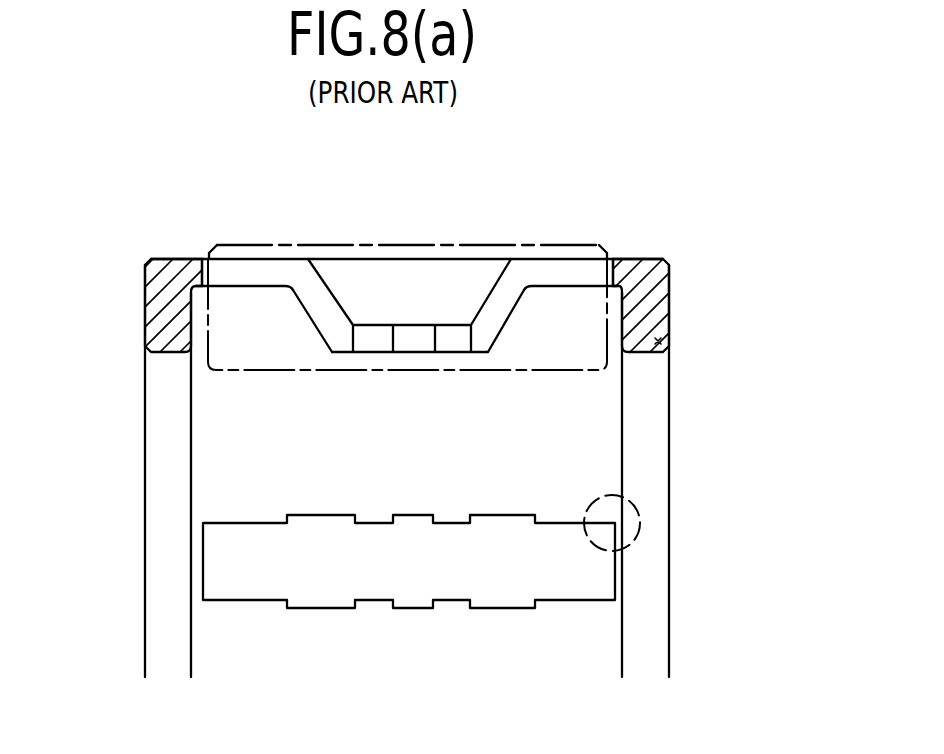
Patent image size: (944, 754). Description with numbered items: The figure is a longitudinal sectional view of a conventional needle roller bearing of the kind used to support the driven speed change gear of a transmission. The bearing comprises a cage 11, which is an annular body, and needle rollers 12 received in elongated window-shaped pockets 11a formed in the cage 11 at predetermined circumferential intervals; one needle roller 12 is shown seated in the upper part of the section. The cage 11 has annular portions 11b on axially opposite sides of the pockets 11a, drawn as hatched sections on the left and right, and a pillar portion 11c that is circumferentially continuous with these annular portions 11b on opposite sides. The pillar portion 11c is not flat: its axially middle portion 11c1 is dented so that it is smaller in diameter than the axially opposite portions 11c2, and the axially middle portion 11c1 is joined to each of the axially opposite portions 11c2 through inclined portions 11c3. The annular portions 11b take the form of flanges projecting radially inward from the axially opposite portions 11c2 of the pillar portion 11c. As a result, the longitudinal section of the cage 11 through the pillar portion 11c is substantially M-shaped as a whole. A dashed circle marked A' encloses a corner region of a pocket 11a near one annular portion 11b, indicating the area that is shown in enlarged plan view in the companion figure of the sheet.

The cage 11 is at (420, 468).
The pocket 11a is at (412, 578).
The annular portion 11b is at (148, 320).
The pillar portion 11c is at (406, 298).
The axially middle portion 11c1 is at (422, 353).
The axially opposite portion 11c2 is at (243, 259).
The inclined portion 11c3 is at (333, 292).
The needle roller 12 is at (607, 247).
The detail region A' is at (670, 517).